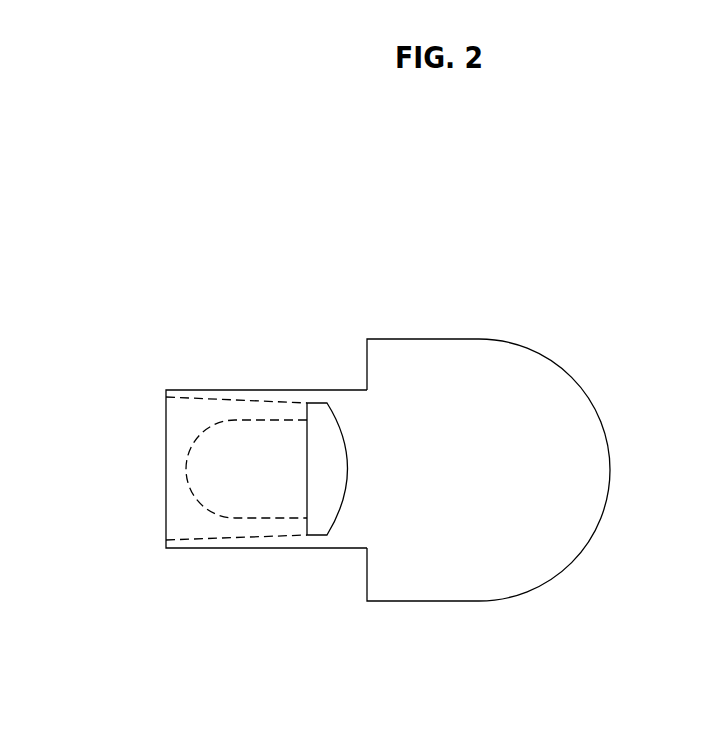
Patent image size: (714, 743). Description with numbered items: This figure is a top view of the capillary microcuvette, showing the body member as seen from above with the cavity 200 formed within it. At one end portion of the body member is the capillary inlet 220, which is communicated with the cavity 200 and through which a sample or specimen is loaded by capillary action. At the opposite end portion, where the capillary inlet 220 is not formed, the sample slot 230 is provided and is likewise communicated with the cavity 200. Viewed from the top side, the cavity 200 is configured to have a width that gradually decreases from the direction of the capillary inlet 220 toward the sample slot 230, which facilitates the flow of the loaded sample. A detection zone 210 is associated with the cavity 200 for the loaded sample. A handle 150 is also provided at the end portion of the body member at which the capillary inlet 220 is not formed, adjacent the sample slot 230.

The handle 150 is at (545, 397).
The cavity 200 is at (200, 453).
The detection zone 210 is at (240, 490).
The capillary inlet 220 is at (165, 468).
The sample slot 230 is at (327, 432).